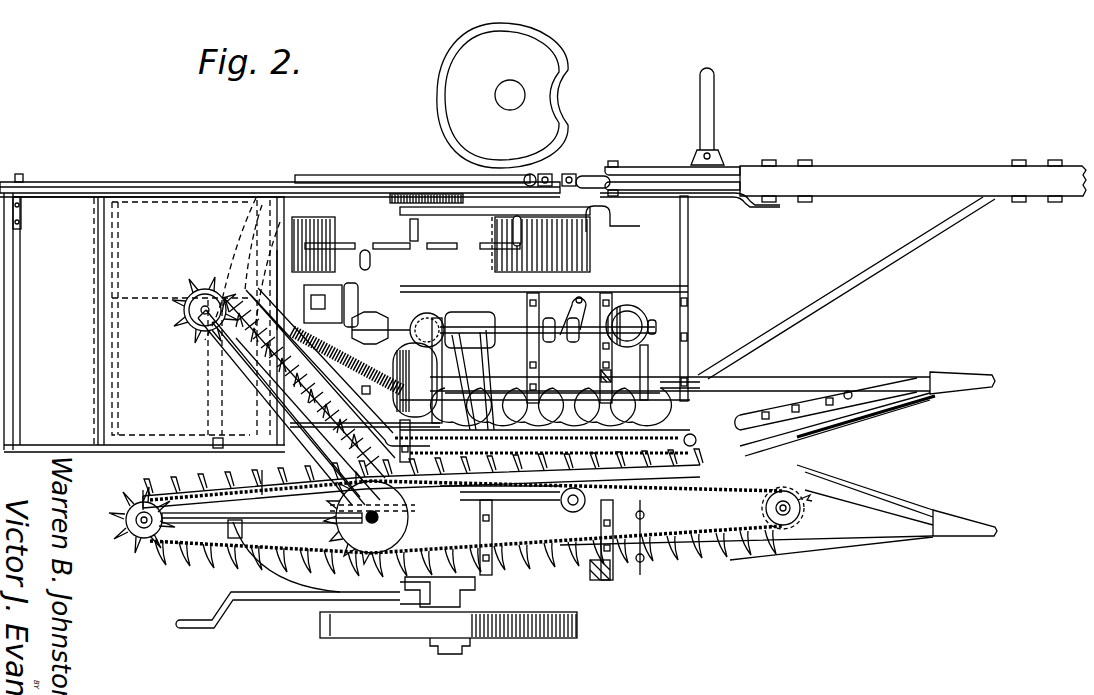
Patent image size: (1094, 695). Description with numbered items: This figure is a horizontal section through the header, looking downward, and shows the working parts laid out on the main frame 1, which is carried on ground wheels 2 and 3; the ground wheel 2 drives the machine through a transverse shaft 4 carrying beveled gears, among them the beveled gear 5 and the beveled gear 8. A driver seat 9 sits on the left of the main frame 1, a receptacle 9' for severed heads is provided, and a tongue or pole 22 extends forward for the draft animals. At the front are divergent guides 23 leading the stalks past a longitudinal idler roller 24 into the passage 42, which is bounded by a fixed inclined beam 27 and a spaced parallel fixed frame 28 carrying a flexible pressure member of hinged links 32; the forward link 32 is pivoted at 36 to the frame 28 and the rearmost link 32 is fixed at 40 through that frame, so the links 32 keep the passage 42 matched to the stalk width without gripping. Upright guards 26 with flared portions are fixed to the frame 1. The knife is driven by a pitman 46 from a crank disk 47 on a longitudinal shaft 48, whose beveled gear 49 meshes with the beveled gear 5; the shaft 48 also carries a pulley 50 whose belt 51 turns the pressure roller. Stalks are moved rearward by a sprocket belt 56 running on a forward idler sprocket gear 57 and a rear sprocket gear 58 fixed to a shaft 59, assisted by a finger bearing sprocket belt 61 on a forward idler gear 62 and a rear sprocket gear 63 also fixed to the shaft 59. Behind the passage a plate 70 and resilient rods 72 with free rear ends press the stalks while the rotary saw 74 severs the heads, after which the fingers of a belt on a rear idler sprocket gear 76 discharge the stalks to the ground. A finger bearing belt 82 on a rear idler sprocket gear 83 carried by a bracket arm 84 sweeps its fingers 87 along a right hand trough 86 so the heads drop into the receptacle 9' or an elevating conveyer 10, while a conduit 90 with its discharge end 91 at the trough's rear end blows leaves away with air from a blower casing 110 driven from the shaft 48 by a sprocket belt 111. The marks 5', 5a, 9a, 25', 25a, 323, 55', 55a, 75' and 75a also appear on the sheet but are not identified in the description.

The main frame 1 is at (282, 574).
The ground wheel 2 is at (350, 222).
The ground wheel 3 is at (503, 632).
The transverse shaft 4 is at (324, 301).
The beveled gear 5 is at (512, 376).
The rack 5' is at (322, 250).
The rack 5a is at (352, 283).
The beveled gear 8 is at (197, 490).
The driver seat 9 is at (519, 95).
The receptacle 9' is at (144, 296).
The hopper box 9a is at (48, 215).
The elevating conveyer 10 is at (369, 518).
The tongue or pole 22 is at (965, 172).
The forward divergent guides 23 is at (957, 512).
The longitudinal idler roller 24 is at (671, 520).
The auger 25' is at (551, 389).
The auger 25a is at (546, 398).
The upright guards 26 is at (765, 505).
The fixed longitudinal inclined beam 27 is at (655, 480).
The fixed frame 28 is at (630, 447).
The links 32 is at (500, 508).
The guide plate 323 is at (495, 500).
The pivotal connection 36 is at (725, 392).
The fixed connection 40 is at (369, 518).
The passage 42 is at (693, 520).
The pitman 46 is at (646, 370).
The crank disk 47 is at (628, 305).
The longitudinal shaft 48 is at (505, 326).
The beveled gear 49 is at (367, 316).
The pulley 50 is at (478, 320).
The belt 51 is at (475, 362).
The guide bar 55' is at (742, 499).
The guide bar 55a is at (755, 470).
The sprocket belt 56 is at (650, 560).
The forward idler sprocket gear 57 is at (808, 535).
The rear sprocket gear 58 is at (360, 533).
The shaft 59 is at (355, 555).
The finger bearing sprocket belt 61 is at (550, 560).
The forward idler gear 62 is at (592, 555).
The rear sprocket gear 63 is at (322, 516).
The plate 70 is at (160, 486).
The rods 72 is at (262, 486).
The rotary saw 74 is at (393, 400).
The spiked chain 75' is at (466, 534).
The spiked chain 75a is at (205, 560).
The rear idler sprocket gear 76 is at (138, 528).
The finger bearing belt 82 is at (222, 362).
The rear idler sprocket gear 83 is at (200, 292).
The bracket arm 84 is at (212, 340).
The right hand trough 86 is at (235, 342).
The fingers 87 is at (262, 382).
The conduit 90 is at (285, 318).
The discharge end 91 is at (292, 322).
The blower casing 110 is at (412, 300).
The sprocket belt 111 is at (425, 325).